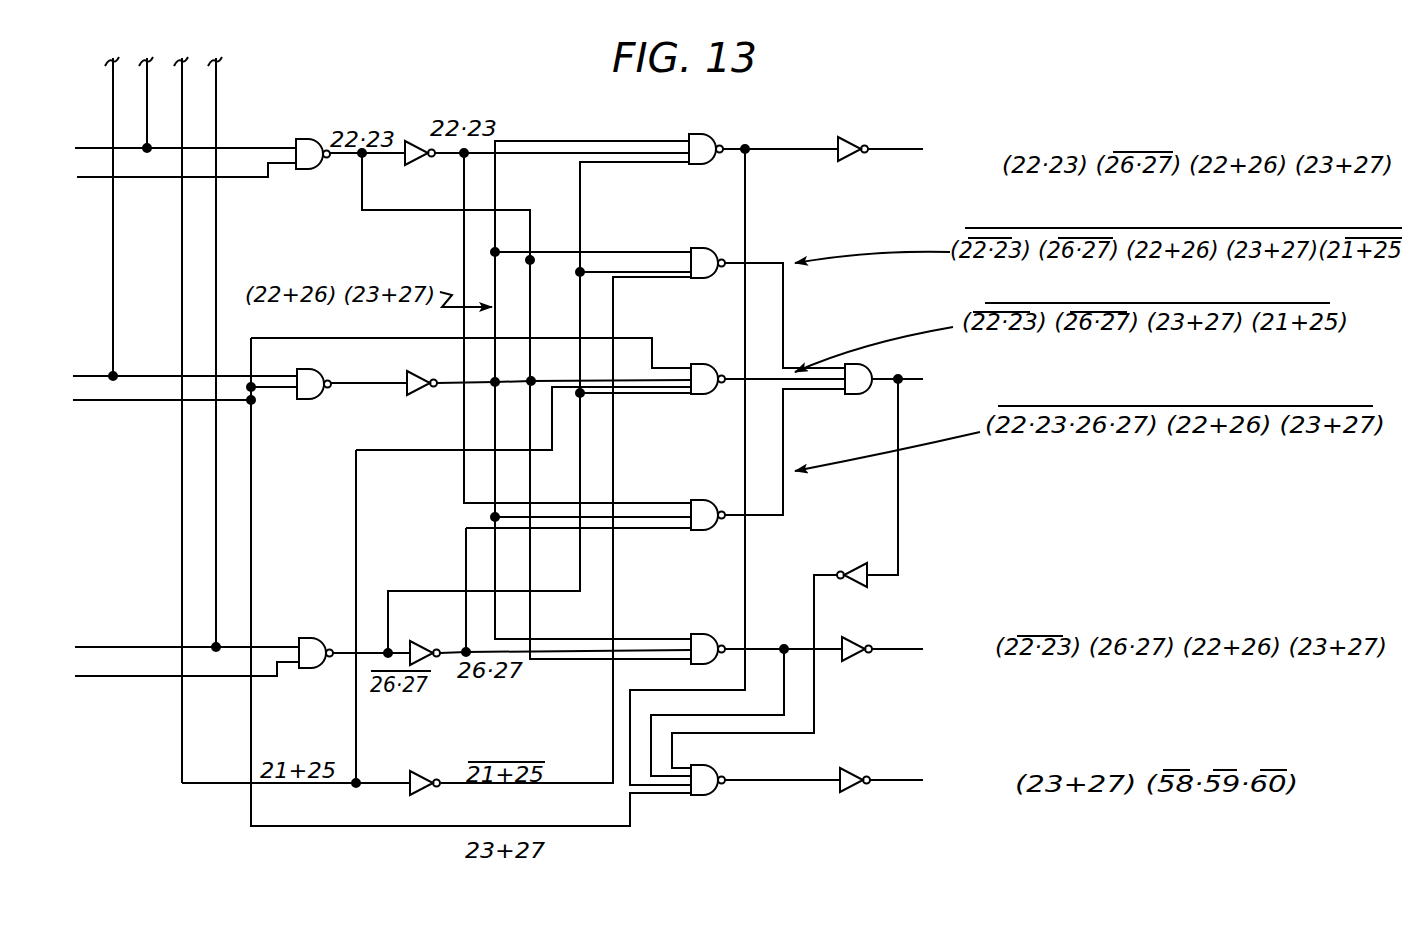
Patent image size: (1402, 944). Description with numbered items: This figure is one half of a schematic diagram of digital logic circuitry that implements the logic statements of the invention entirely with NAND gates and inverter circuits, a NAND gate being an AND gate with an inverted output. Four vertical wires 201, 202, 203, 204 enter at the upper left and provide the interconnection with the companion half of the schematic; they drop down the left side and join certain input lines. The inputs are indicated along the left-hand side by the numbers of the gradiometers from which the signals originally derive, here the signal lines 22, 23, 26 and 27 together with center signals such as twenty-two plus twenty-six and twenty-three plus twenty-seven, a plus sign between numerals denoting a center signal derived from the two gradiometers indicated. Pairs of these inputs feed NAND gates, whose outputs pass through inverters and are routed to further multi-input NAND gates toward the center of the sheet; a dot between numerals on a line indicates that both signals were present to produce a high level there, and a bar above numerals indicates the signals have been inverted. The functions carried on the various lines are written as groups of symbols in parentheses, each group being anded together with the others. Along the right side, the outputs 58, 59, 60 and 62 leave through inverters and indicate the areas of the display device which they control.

The wire 201 is at (112, 80).
The wire 202 is at (147, 97).
The wire 203 is at (180, 93).
The wire 204 is at (216, 70).
The gradiometer signal input 22 is at (169, 152).
The gradiometer signal input 23 is at (169, 178).
The gradiometer signal input 26 is at (187, 633).
The gradiometer signal input 27 is at (187, 683).
The display area output 58 is at (985, 171).
The display area output 59 is at (905, 381).
The display area output 60 is at (993, 650).
The display area output 62 is at (1012, 787).